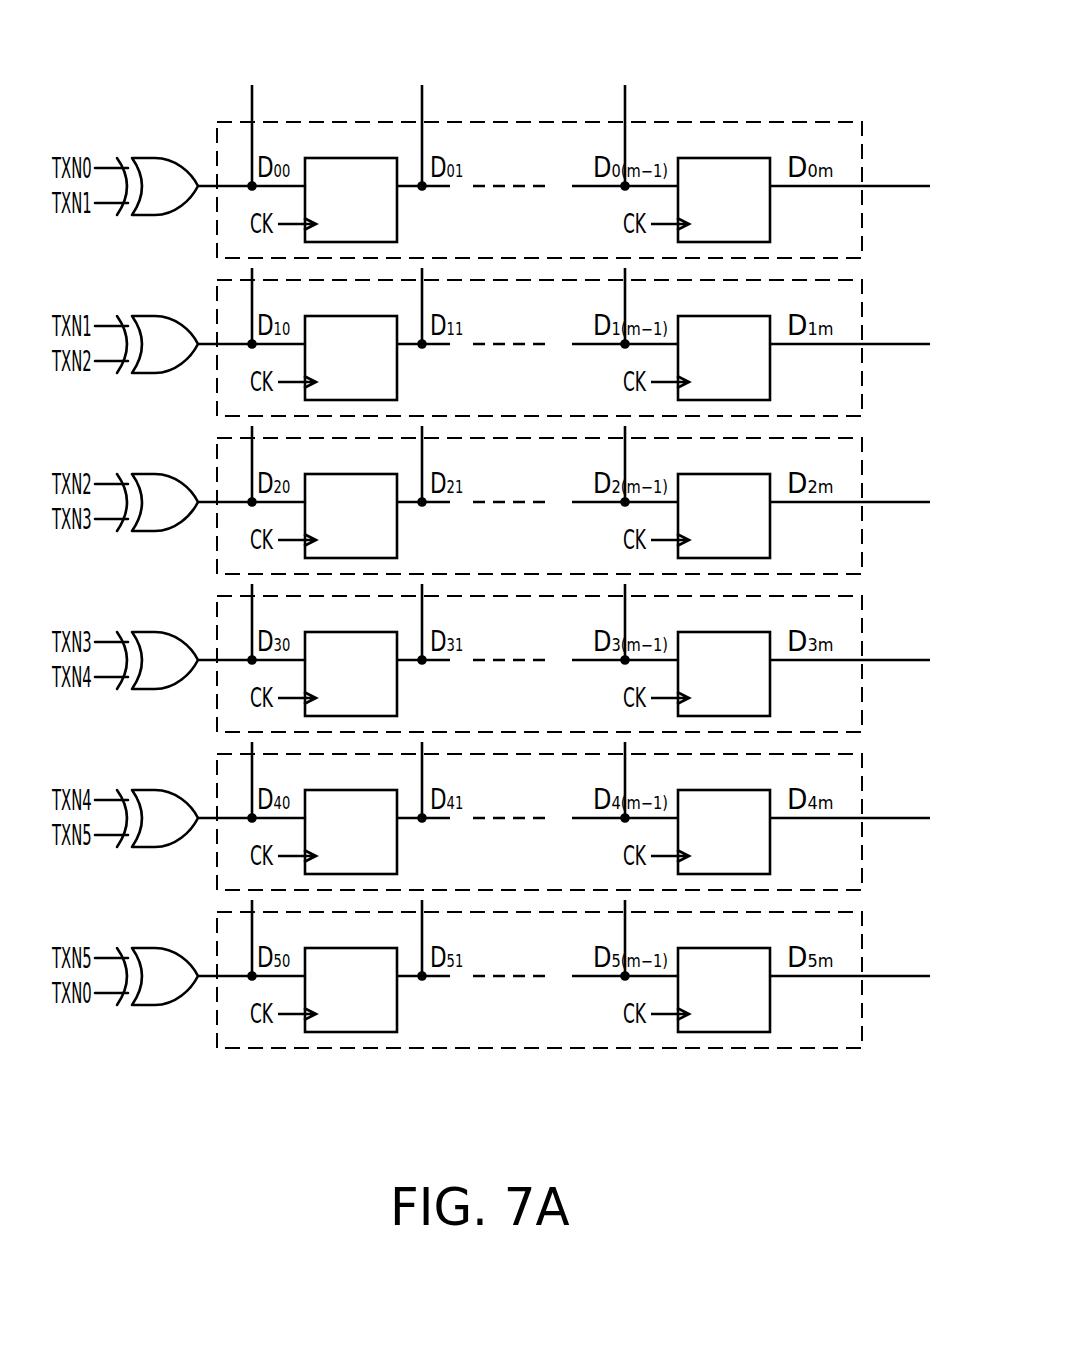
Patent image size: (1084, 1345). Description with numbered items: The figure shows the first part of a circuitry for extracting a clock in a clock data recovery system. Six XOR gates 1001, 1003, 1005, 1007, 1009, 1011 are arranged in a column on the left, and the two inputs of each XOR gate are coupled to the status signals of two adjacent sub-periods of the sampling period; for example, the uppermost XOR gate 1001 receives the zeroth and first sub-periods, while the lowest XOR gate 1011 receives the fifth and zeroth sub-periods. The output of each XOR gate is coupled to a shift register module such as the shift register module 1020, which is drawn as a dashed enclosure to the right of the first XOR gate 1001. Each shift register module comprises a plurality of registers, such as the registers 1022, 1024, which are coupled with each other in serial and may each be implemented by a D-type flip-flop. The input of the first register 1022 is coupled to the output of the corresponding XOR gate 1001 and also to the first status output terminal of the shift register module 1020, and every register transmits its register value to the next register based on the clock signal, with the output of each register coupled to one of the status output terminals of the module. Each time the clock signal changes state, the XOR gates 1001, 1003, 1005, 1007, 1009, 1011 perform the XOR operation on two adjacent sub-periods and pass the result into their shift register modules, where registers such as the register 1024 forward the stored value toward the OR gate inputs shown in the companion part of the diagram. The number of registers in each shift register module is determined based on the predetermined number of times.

The XOR gate 1001 is at (168, 158).
The XOR gate 1003 is at (168, 316).
The XOR gate 1005 is at (168, 474).
The XOR gate 1007 is at (168, 632).
The XOR gate 1009 is at (168, 790).
The XOR gate 1011 is at (168, 948).
The shift register module 1020 is at (738, 121).
The register 1022 is at (345, 158).
The register 1024 is at (748, 158).